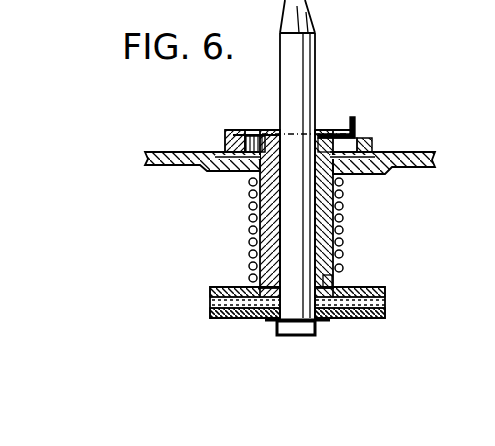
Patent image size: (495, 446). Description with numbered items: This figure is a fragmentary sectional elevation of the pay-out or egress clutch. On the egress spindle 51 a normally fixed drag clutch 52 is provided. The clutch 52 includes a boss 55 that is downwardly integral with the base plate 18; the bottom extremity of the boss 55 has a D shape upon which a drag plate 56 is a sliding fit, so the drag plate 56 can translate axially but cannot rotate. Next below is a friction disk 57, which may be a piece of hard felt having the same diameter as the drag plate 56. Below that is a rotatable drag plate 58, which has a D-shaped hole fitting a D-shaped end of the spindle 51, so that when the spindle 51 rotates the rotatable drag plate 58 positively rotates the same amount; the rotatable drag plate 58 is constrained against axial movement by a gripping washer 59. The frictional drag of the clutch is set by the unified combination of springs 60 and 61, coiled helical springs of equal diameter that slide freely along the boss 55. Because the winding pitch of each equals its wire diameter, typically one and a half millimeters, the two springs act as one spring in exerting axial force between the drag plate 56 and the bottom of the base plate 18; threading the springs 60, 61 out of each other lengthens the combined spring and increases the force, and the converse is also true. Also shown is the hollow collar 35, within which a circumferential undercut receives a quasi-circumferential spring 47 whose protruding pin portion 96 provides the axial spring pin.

The base plate 18 is at (167, 153).
The hollow collar 35 is at (374, 145).
The quasi-circumferential spring 47 is at (283, 126).
The egress spindle 51 is at (310, 56).
The drag clutch 52 is at (204, 318).
The boss 55 is at (253, 238).
The drag plate 56 is at (225, 289).
The friction disk 57 is at (385, 304).
The rotatable drag plate 58 is at (236, 313).
The gripping washer 59 is at (326, 321).
The spring 60 is at (336, 184).
The spring 61 is at (340, 269).
The pin portion 96 is at (353, 128).